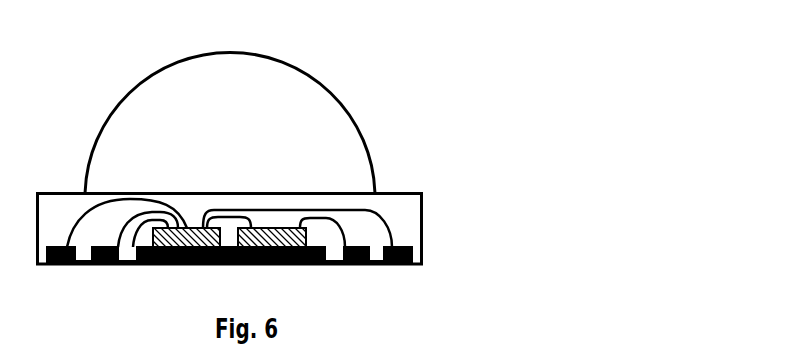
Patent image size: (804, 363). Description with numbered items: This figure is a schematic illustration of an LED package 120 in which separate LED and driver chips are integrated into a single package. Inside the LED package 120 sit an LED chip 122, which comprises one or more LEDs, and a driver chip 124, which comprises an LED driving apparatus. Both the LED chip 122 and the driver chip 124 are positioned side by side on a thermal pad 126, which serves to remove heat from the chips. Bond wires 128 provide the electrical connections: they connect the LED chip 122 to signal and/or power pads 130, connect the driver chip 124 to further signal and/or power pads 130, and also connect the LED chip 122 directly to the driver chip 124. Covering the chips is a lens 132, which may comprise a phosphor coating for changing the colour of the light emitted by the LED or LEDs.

The LED package 120 is at (422, 218).
The LED chip 122 is at (270, 226).
The driver chip 124 is at (196, 228).
The thermal pad 126 is at (206, 265).
The bond wires 128 is at (128, 218).
The signal and/or power pads 130 is at (405, 287).
The lens 132 is at (313, 80).